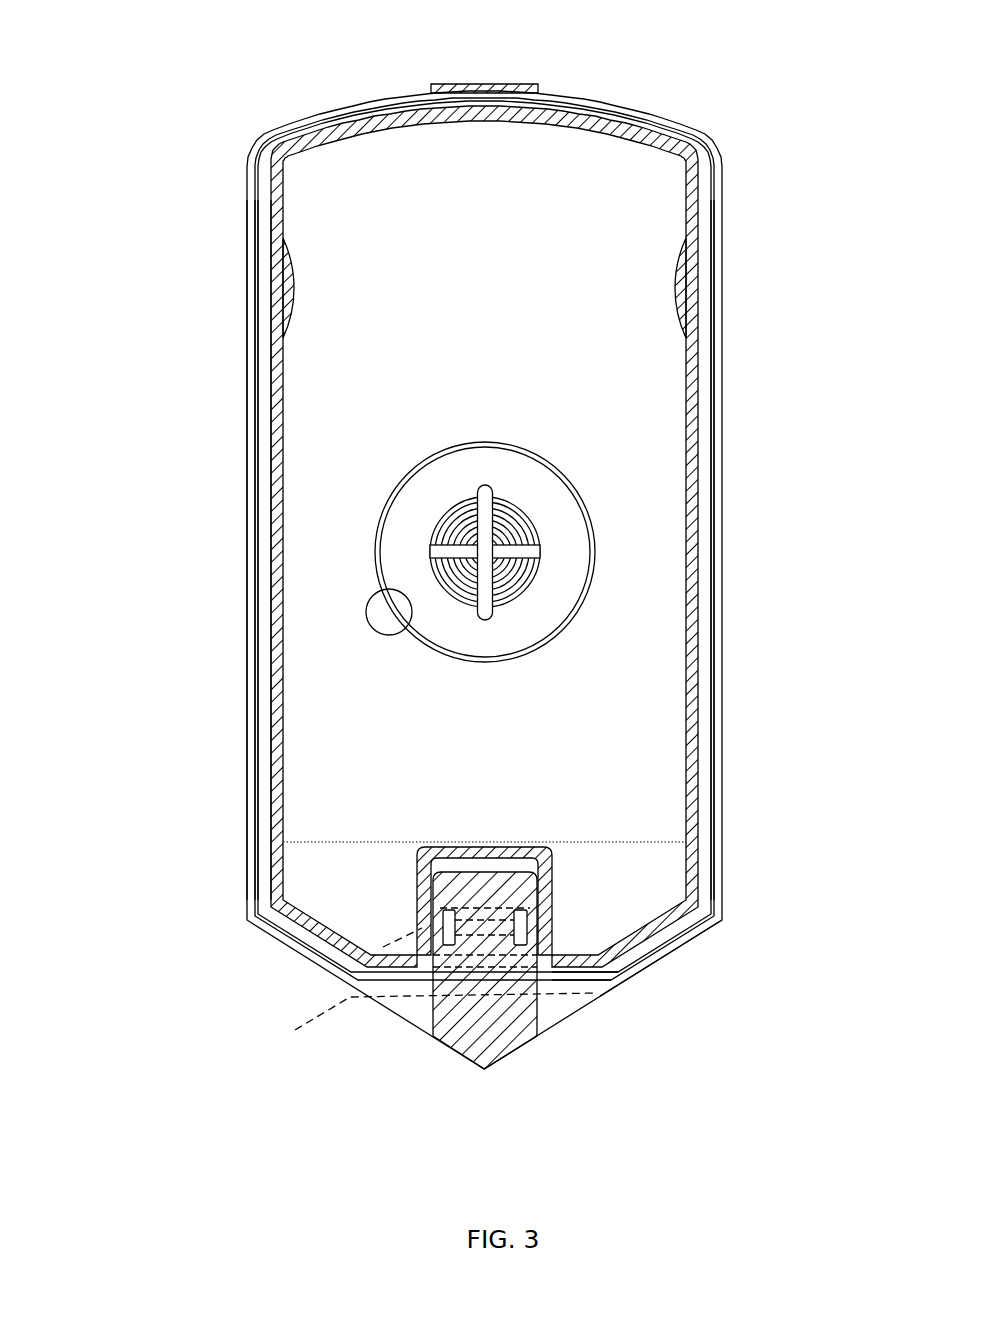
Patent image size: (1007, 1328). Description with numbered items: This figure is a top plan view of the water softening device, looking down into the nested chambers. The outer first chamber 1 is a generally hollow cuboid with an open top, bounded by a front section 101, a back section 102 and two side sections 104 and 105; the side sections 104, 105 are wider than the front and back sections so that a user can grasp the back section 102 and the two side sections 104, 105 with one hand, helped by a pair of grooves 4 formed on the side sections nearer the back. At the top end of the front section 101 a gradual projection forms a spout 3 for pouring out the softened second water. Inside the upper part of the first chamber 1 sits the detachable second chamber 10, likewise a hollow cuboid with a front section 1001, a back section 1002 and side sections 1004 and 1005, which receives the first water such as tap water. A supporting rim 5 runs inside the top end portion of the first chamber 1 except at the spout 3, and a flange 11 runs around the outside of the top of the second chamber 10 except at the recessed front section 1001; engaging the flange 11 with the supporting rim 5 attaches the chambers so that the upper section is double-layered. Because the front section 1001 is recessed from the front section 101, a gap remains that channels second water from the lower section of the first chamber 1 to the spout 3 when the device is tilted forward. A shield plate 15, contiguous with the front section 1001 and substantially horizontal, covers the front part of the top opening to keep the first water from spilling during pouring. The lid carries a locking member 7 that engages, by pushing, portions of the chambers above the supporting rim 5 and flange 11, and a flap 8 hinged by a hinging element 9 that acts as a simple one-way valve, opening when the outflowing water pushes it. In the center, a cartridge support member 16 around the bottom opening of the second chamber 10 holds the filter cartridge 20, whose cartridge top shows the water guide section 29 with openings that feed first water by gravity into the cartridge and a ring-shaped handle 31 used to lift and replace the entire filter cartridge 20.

The first chamber 1 is at (733, 307).
The second chamber 10 is at (713, 185).
The back section 102 is at (655, 108).
The back section 1002 is at (584, 100).
The side section 105 is at (247, 367).
The side section 1005 is at (258, 410).
The side section 104 is at (720, 550).
The side section 1004 is at (708, 655).
The front section 101 is at (660, 957).
The front section 1001 is at (625, 966).
The grooves 4 is at (292, 290).
The supporting rim 5 is at (255, 742).
The locking member 7 is at (270, 778).
The flange 11 is at (263, 825).
The shield plate 15 is at (328, 888).
The cartridge support member 16 is at (405, 620).
The filter cartridge 20 is at (478, 528).
The water guide section 29 is at (440, 535).
The handle 31 is at (480, 490).
The spout 3 is at (416, 1018).
The flap 8 is at (450, 995).
The hinging element 9 is at (436, 990).